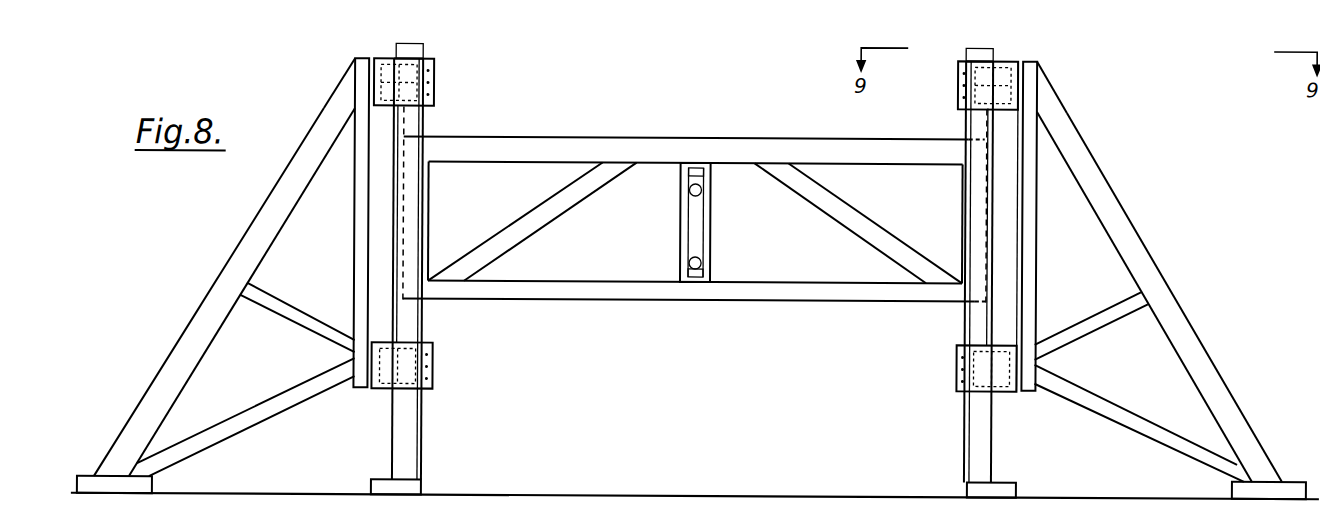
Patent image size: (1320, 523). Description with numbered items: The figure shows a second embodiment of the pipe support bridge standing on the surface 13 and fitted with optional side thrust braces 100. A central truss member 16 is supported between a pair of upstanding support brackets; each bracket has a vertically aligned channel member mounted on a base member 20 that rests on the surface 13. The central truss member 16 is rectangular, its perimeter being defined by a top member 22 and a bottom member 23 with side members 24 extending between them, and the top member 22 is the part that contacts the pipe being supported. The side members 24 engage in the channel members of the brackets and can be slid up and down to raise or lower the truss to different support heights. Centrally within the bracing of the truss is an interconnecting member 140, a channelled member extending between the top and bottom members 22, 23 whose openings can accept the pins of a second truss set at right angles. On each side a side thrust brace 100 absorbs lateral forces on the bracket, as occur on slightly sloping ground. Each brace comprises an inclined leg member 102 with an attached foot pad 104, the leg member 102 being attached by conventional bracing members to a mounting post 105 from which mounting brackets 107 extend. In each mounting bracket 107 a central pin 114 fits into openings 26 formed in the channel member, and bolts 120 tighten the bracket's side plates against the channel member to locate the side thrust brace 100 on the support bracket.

The surface 13 is at (629, 495).
The central truss member 16 is at (696, 199).
The base member 20 is at (382, 481).
The top member 22 is at (745, 138).
The bottom member 23 is at (612, 292).
The side members 24 is at (432, 222).
The openings 26 is at (421, 119).
The side thrust brace 100 is at (694, 268).
The leg member 102 is at (200, 333).
The foot pad 104 is at (100, 479).
The mounting post 105 is at (354, 250).
The mounting bracket 107 is at (375, 62).
The central pin 114 is at (437, 80).
The bolts 120 is at (437, 72).
The interconnecting member 140 is at (698, 232).